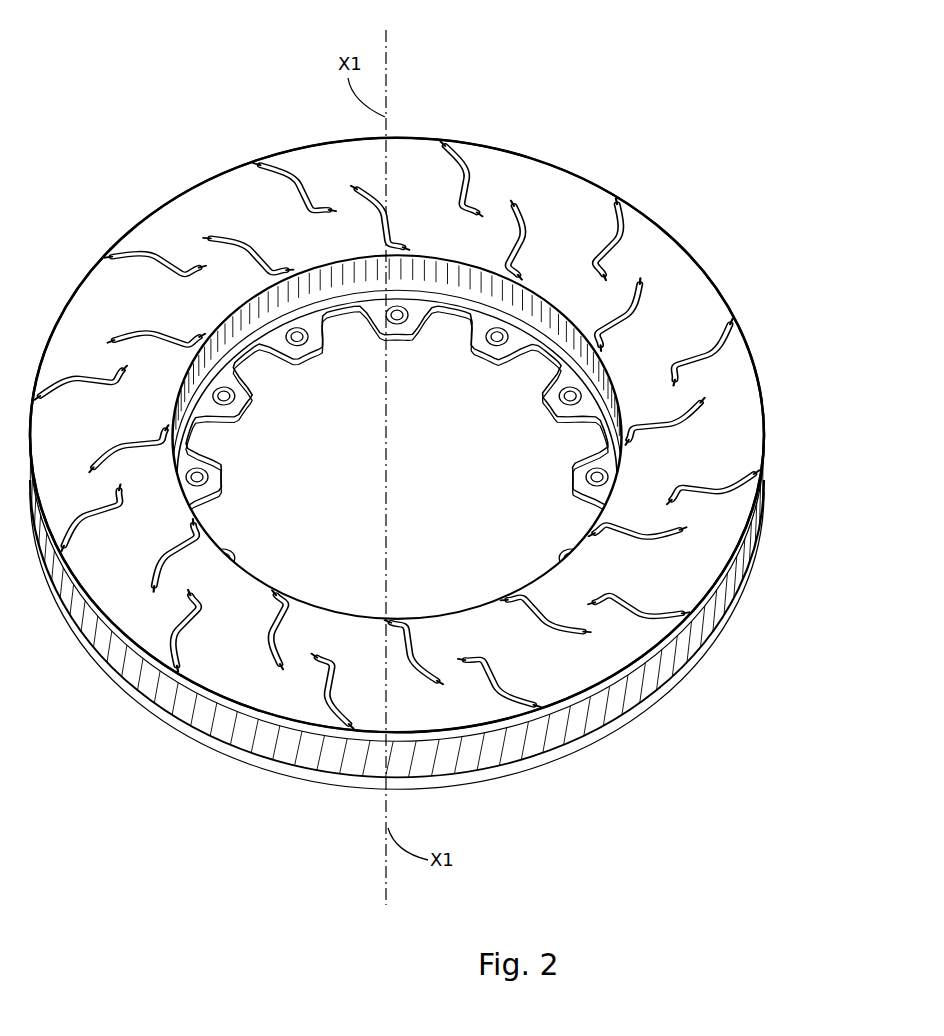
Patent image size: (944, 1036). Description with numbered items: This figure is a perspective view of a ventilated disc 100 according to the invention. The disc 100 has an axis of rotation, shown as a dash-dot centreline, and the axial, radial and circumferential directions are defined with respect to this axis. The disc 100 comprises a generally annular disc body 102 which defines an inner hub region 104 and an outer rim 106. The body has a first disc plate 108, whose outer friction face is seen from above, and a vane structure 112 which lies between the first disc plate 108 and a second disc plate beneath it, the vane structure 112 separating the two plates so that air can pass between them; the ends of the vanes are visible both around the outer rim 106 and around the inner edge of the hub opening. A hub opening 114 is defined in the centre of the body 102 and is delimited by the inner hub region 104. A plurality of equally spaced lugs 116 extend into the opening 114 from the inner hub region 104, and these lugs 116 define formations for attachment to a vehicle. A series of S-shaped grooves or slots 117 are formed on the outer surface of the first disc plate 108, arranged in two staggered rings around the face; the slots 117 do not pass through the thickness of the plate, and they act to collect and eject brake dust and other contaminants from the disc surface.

The ventilated disc 100 is at (127, 110).
The disc body 102 is at (548, 188).
The inner hub region 104 is at (482, 337).
The outer rim 106 is at (706, 655).
The first disc plate 108 is at (437, 209).
The vane structure 112 is at (333, 288).
The hub opening 114 is at (337, 506).
The lugs 116 is at (217, 413).
The S-shaped grooves or slots 117 is at (720, 327).